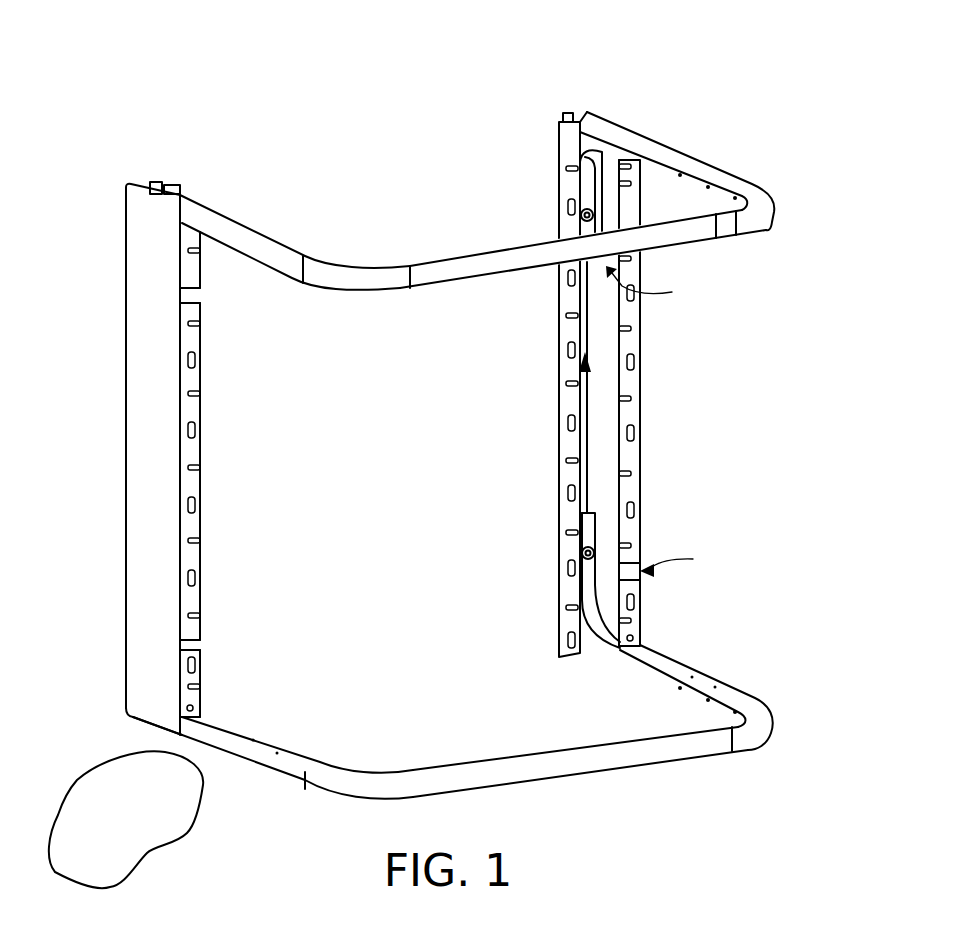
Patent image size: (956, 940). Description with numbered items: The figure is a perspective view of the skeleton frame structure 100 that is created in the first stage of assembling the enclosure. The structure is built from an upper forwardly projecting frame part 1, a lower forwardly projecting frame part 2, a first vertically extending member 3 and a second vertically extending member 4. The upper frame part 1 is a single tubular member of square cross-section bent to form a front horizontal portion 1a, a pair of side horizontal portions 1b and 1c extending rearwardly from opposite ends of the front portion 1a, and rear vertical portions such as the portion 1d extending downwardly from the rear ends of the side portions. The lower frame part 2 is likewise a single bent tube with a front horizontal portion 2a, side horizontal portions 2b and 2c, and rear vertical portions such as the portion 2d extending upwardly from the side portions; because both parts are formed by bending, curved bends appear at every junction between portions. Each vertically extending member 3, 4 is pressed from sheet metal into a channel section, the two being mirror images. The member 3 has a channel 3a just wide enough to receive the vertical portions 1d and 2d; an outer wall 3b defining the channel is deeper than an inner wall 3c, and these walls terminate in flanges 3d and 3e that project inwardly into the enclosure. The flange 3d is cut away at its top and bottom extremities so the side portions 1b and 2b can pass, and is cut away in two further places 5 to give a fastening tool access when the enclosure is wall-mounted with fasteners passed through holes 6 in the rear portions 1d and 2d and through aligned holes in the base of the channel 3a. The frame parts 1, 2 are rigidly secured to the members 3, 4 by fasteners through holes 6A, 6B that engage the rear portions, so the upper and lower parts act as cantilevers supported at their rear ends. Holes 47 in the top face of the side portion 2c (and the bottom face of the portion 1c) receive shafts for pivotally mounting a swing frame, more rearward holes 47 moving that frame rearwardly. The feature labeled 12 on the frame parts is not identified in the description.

The upper forwardly projecting frame part 1 is at (477, 214).
The front horizontal portion 1a is at (464, 272).
The side horizontal portion 1b is at (683, 160).
The side horizontal portion 1c is at (245, 224).
The rear vertical portion 1d is at (597, 187).
The lower forwardly projecting frame part 2 is at (485, 747).
The front horizontal portion 2a is at (573, 763).
The side horizontal portion 2b is at (758, 700).
The side horizontal portion 2c is at (267, 747).
The rear vertical portion 2d is at (590, 572).
The first vertically extending member 3 is at (608, 372).
The channel 3a is at (577, 380).
The outer wall 3b is at (605, 338).
The inner wall 3c is at (565, 118).
The flange 3d is at (633, 385).
The flange 3e is at (568, 327).
The second vertically extending member 4 is at (168, 455).
The cut-away places 5 is at (645, 421).
The holes 6 is at (580, 215).
The hole 6A is at (177, 213).
The hole 6B is at (177, 725).
The connector band 12 is at (192, 204).
The holes 47 is at (277, 753).
The skeleton frame structure 100 is at (176, 784).